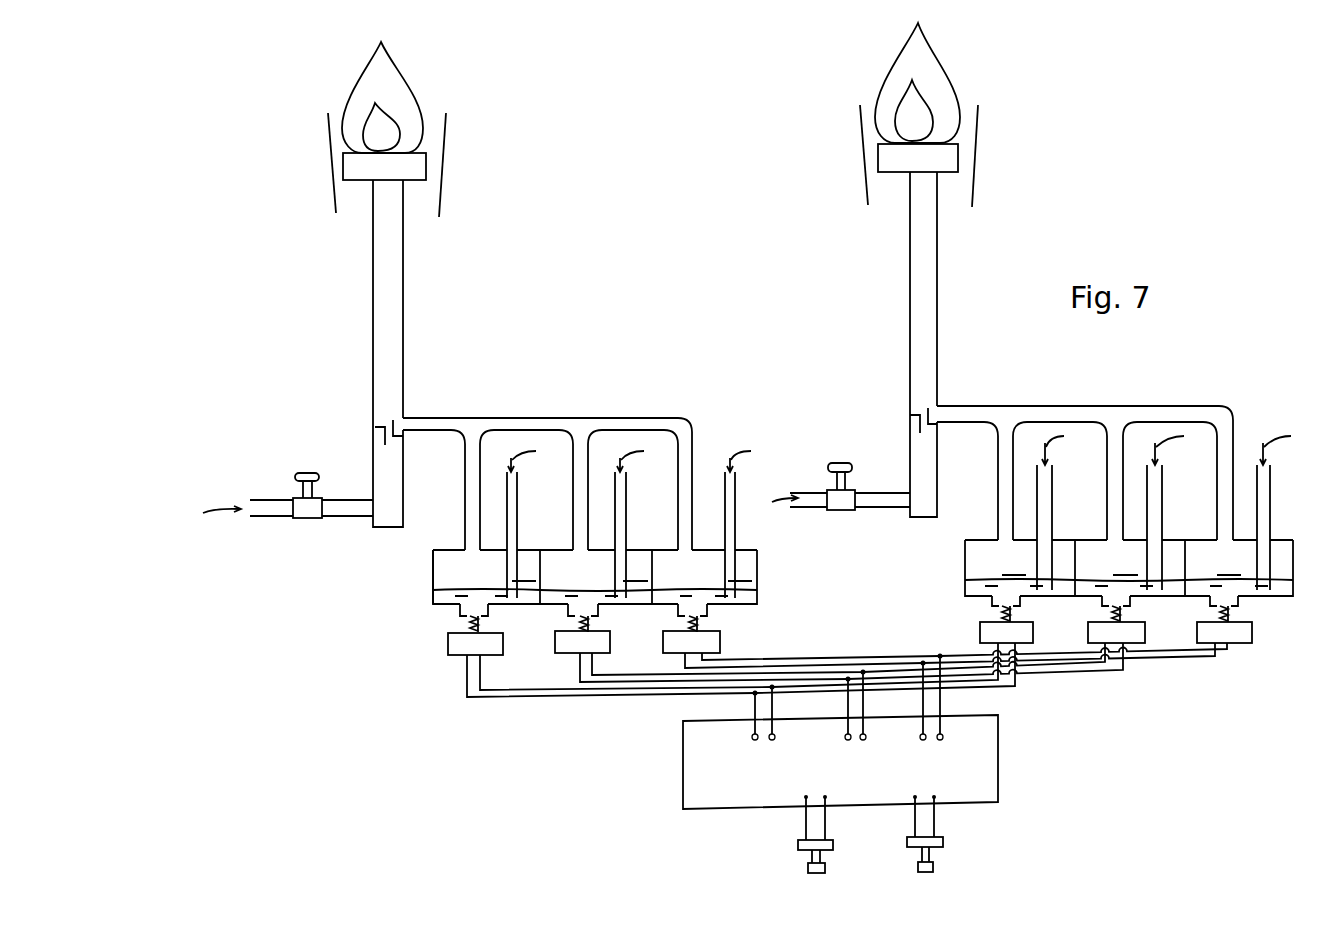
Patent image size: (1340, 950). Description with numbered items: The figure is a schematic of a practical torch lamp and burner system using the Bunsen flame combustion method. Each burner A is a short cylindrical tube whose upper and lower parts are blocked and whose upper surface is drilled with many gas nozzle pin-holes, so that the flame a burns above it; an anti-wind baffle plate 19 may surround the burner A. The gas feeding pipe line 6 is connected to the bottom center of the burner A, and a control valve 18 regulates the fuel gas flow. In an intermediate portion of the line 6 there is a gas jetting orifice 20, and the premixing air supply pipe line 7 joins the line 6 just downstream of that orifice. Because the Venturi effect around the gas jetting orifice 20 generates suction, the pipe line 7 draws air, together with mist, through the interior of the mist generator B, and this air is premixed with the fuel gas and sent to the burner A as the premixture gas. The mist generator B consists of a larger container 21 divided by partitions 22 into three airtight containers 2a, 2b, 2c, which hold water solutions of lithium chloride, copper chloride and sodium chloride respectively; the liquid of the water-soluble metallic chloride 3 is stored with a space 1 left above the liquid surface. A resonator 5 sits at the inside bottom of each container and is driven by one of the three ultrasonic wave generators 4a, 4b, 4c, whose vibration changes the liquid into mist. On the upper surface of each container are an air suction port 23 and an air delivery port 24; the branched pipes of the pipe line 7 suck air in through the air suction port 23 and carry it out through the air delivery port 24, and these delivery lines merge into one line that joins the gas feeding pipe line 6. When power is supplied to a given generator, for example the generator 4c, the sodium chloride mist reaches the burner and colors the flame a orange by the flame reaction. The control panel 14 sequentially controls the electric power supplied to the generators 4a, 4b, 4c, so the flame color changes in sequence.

The flame a is at (401, 68).
The burner A is at (420, 163).
The anti-wind baffle plate 19 is at (330, 178).
The gas feeding pipe line 6 is at (402, 320).
The gas jetting orifice 20 is at (375, 432).
The control valve 18 is at (308, 518).
The premixing air supply pipe line 7 is at (578, 417).
The space 1 is at (450, 552).
The larger container 21 is at (433, 578).
The partition 22 is at (537, 548).
The air suction port 23 is at (505, 546).
The air delivery port 24 is at (473, 557).
The No. 1 airtight container 2a is at (759, 572).
The No. 2 airtight container 2b is at (866, 572).
The No. 3 airtight container 2c is at (947, 563).
The liquid of the water-soluble metallic chloride 3 is at (517, 598).
The resonator 5 is at (463, 620).
The No. 1 ultrasonic wave generator 4a is at (740, 639).
The No. 2 ultrasonic wave generator 4b is at (850, 638).
The No. 3 ultrasonic wave generator 4c is at (957, 638).
The mist generator B is at (761, 565).
The control panel 14 is at (993, 762).